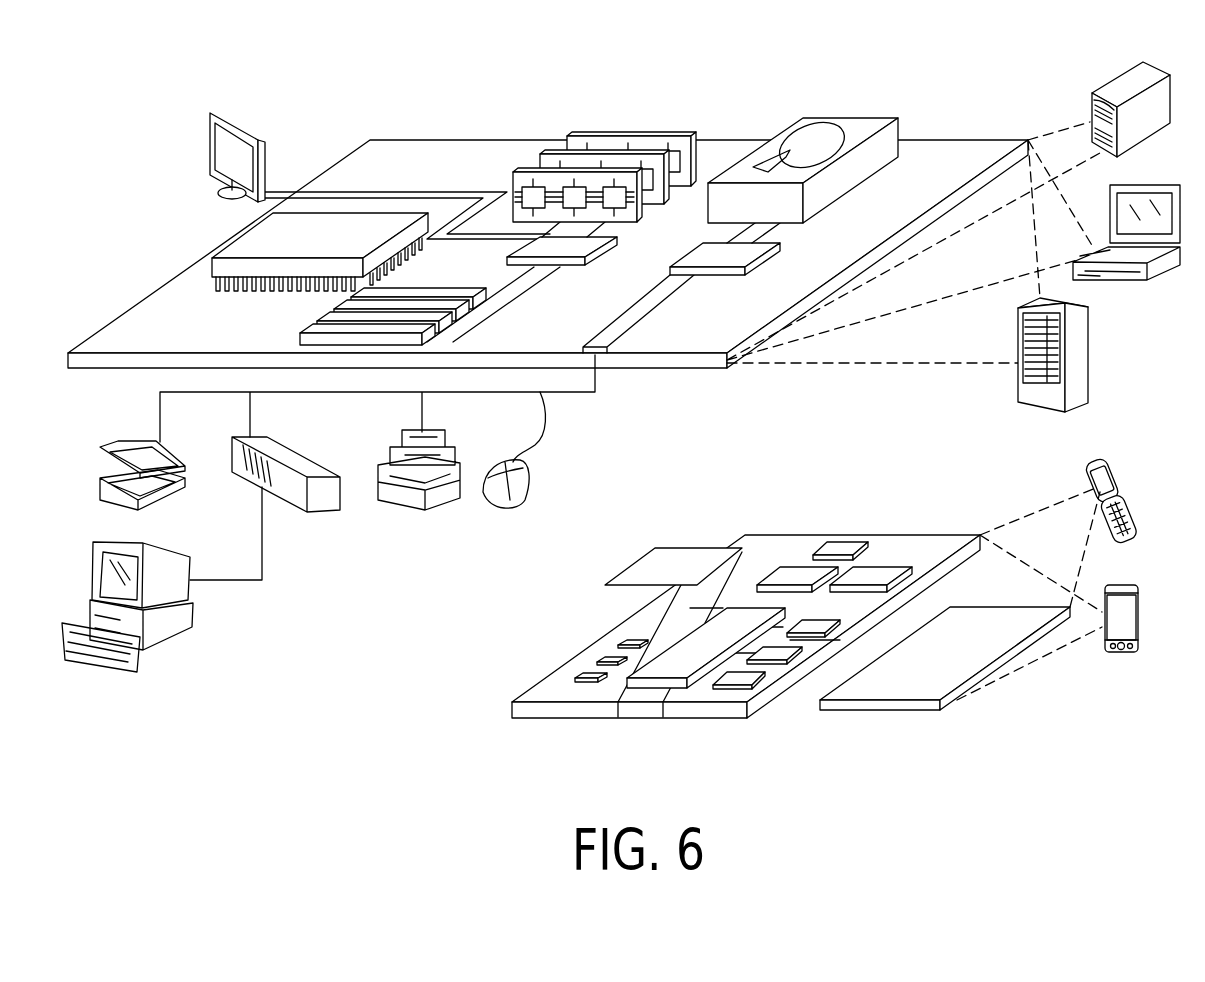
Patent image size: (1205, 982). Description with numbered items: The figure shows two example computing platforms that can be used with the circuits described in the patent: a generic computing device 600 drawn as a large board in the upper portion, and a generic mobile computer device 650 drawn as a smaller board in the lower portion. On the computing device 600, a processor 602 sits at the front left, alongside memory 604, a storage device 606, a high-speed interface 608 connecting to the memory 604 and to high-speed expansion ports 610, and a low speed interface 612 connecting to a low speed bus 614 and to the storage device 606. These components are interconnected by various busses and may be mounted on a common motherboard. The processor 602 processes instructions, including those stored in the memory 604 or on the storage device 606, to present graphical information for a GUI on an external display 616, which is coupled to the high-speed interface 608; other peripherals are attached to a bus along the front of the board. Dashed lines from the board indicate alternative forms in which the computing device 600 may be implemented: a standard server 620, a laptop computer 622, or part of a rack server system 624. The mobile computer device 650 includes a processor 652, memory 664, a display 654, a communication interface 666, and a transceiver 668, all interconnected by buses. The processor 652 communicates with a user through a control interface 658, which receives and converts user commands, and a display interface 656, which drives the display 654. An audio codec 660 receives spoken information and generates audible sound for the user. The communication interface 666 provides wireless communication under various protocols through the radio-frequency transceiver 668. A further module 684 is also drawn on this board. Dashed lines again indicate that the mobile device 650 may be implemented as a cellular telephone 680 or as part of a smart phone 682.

The computing device 600 is at (325, 85).
The processor 602 is at (232, 242).
The memory 604 is at (633, 131).
The storage device 606 is at (839, 118).
The high-speed interface 608 is at (573, 245).
The high-speed expansion ports 610 is at (322, 322).
The low speed interface 612 is at (702, 254).
The low speed bus 614 is at (601, 340).
The display 616 is at (215, 112).
The standard server 620 is at (1108, 88).
The laptop computer 622 is at (1161, 185).
The rack server system 624 is at (1090, 355).
The mobile computer device 650 is at (1014, 710).
The processor 652 is at (682, 650).
The display 654 is at (978, 620).
The display interface 656 is at (757, 672).
The control interface 658 is at (782, 653).
The audio codec 660 is at (815, 622).
The memory 664 is at (600, 657).
The communication interface 666 is at (795, 568).
The transceiver 668 is at (880, 568).
The cellular telephone 680 is at (840, 545).
The smart phone 682 is at (730, 548).
The antenna module 684 is at (653, 547).